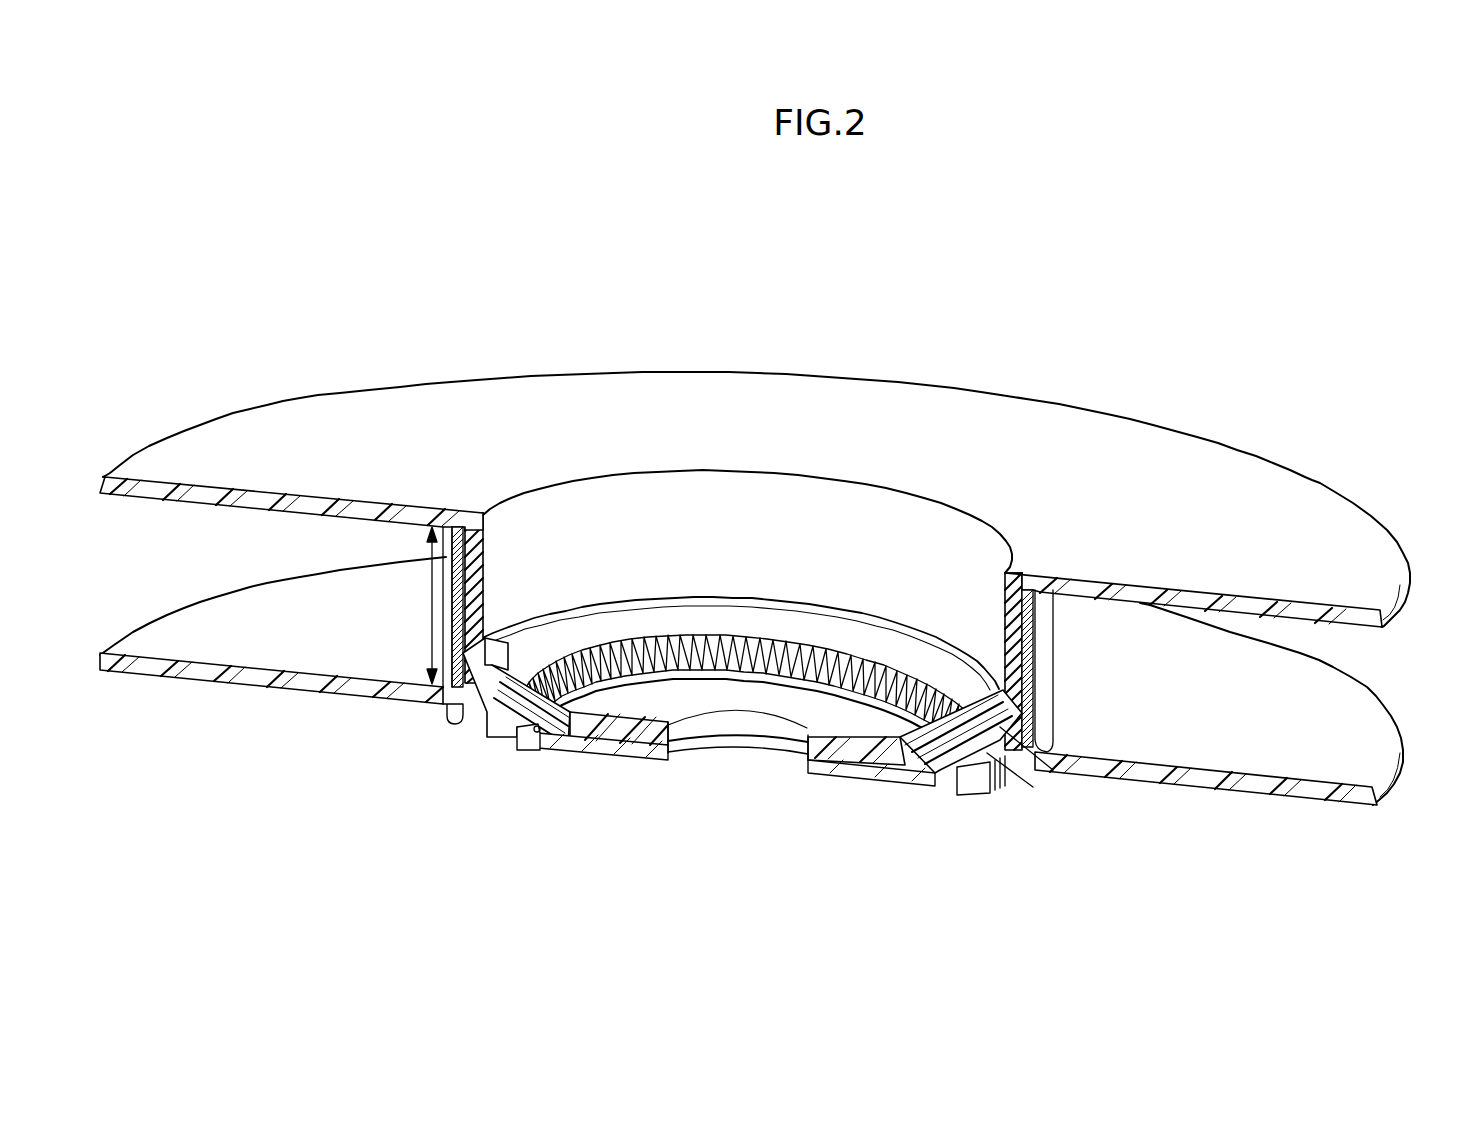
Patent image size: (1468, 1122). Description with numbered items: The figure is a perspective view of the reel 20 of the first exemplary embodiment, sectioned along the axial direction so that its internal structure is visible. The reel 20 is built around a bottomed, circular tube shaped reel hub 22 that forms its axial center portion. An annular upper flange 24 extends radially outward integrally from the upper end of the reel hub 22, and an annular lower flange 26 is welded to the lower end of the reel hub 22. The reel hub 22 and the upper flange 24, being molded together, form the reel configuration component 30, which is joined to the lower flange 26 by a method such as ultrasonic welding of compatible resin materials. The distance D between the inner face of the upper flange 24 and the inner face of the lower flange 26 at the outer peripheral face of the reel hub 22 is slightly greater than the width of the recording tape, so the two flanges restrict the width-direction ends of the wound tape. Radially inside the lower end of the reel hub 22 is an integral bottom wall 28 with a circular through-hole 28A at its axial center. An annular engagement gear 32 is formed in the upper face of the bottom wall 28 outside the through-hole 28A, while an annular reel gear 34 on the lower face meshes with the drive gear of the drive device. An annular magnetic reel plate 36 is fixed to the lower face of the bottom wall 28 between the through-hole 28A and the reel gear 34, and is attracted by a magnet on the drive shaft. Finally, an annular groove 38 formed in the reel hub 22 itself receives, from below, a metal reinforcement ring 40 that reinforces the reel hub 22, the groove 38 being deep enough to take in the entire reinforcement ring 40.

The reel 20 is at (1165, 340).
The reel hub 22 is at (675, 510).
The upper flange 24 is at (1315, 500).
The lower flange 26 is at (1375, 723).
The bottom wall 28 is at (645, 705).
The through-hole 28A is at (733, 727).
The reel configuration component 30 is at (925, 382).
The engagement gear 32 is at (768, 638).
The reel gear 34 is at (970, 780).
The reel plate 36 is at (578, 755).
The groove 38 is at (1038, 690).
The reinforcement ring 40 is at (1032, 588).
The distance D is at (428, 605).